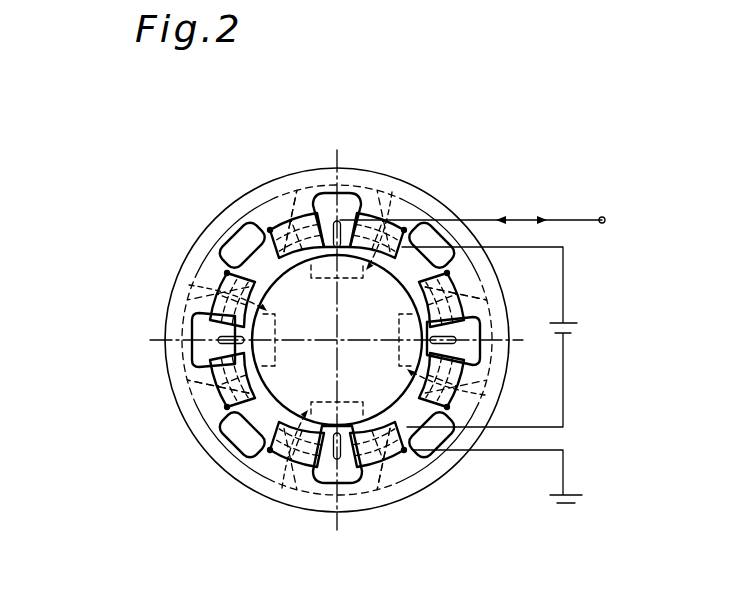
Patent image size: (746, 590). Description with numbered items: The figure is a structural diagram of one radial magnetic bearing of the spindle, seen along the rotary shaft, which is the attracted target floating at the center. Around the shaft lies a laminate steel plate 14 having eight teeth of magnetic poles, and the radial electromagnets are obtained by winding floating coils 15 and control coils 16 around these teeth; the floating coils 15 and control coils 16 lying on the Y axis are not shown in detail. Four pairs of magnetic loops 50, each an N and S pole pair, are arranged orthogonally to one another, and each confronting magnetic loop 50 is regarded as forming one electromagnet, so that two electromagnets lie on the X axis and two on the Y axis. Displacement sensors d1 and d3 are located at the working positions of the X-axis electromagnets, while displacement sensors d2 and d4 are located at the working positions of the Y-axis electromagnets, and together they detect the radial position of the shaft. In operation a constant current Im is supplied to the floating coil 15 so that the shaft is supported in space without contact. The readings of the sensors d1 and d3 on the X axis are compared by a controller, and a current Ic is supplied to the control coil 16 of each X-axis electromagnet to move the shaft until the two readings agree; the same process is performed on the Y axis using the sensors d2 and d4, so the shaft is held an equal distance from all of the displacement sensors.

The laminate steel plate 14 is at (197, 267).
The floating coil 15 is at (229, 271).
The control coil 16 is at (310, 203).
The magnetic loop 50 is at (264, 202).
The displacement sensor d1 is at (388, 143).
The displacement sensor d2 is at (458, 344).
The displacement sensor d3 is at (339, 462).
The displacement sensor d4 is at (222, 344).
The X axis X is at (336, 322).
The Y axis Y is at (324, 339).
The control current Ic is at (472, 200).
The constant current Im is at (492, 375).